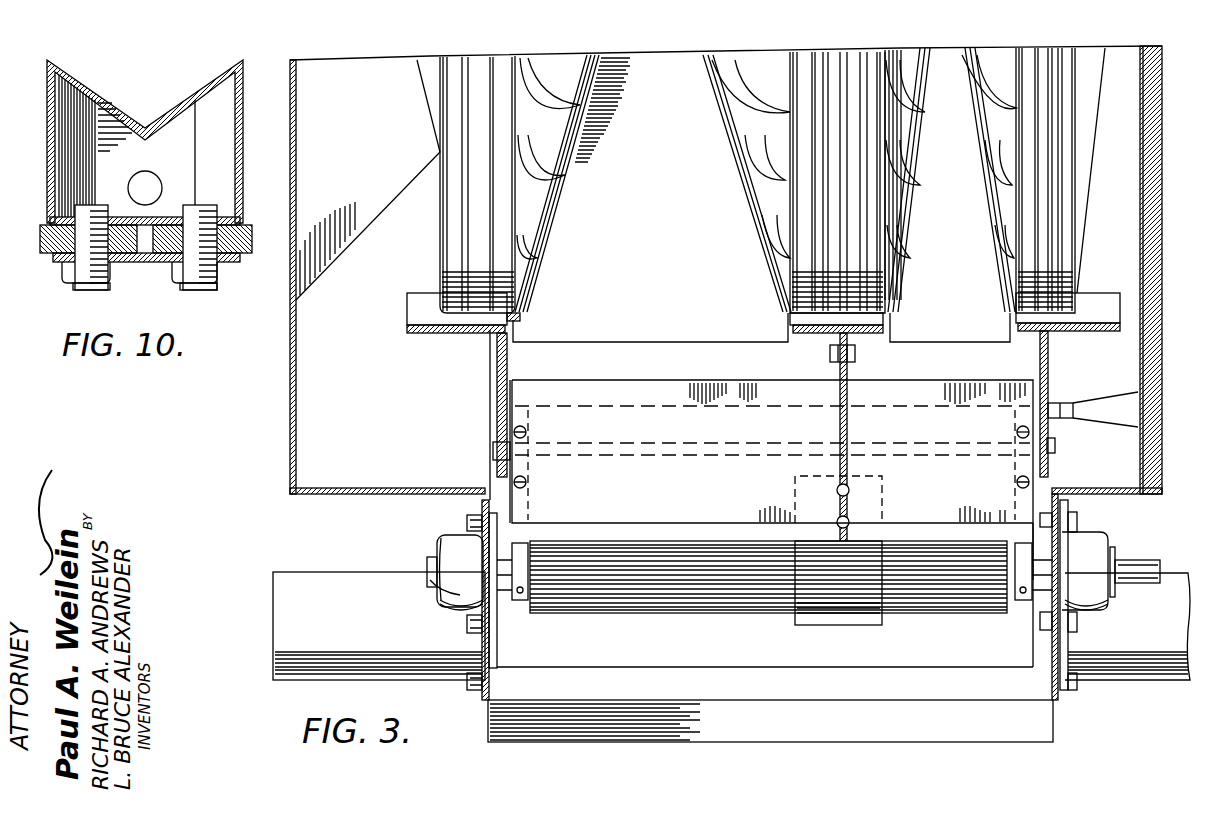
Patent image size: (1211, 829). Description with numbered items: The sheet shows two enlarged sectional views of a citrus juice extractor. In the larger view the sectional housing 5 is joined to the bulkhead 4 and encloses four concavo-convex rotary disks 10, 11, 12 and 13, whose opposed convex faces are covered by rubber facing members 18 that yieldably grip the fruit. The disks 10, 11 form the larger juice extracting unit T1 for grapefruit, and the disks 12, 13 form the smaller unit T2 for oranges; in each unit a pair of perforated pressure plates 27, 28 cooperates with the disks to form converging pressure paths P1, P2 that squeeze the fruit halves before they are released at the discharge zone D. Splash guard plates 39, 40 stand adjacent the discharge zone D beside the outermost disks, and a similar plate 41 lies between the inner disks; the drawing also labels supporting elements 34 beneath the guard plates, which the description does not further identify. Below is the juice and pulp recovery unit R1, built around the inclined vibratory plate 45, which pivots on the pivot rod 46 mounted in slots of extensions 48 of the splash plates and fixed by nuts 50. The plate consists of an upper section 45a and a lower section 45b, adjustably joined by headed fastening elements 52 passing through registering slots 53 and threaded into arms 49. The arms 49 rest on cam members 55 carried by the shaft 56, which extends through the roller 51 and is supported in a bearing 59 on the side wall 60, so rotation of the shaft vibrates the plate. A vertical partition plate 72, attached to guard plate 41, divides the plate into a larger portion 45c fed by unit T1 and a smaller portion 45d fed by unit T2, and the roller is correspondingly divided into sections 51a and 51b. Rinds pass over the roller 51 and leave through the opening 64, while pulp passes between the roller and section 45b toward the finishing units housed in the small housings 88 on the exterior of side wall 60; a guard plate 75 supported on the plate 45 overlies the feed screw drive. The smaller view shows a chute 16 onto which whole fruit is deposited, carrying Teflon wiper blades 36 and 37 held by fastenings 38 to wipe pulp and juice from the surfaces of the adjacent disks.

In FIG. 3, the bulkhead 4 is at (1163, 172).
In FIG. 3, the sectional housing 5 is at (290, 412).
In FIG. 3, the rotary disk 10 is at (545, 137).
In FIG. 3, the rotary disk 11 is at (755, 145).
In FIG. 3, the rotary disk 12 is at (903, 145).
In FIG. 3, the rotary disk 13 is at (980, 152).
In FIG. 10, the chute 16 is at (127, 96).
In FIG. 3, the rubber facing member 18 is at (558, 62).
In FIG. 3, the perforated pressure plate 27 is at (533, 296).
In FIG. 3, the perforated pressure plate 28 is at (772, 296).
In FIG. 3, the support plate 34 is at (522, 320).
In FIG. 10, the wiper blade 36 is at (50, 262).
In FIG. 10, the wiper blade 37 is at (242, 262).
In FIG. 10, the fastening 38 is at (190, 290).
In FIG. 3, the splash guard plate 39 is at (440, 333).
In FIG. 3, the splash guard plate 40 is at (1112, 331).
In FIG. 3, the splash guard plate 41 is at (858, 345).
In FIG. 3, the vibratory plate 45 is at (540, 463).
In FIG. 3, the upper plate section 45a is at (771, 465).
In FIG. 3, the lower plate section 45b is at (738, 535).
In FIG. 3, the larger plate portion 45c is at (682, 505).
In FIG. 3, the smaller plate portion 45d is at (975, 510).
In FIG. 3, the pivot rod 46 is at (695, 443).
In FIG. 3, the extension 48 is at (500, 418).
In FIG. 3, the arm 49 is at (515, 575).
In FIG. 3, the nut 50 is at (493, 445).
In FIG. 3, the roller 51 is at (752, 577).
In FIG. 3, the roller section 51a is at (643, 592).
In FIG. 3, the roller section 51b is at (930, 592).
In FIG. 3, the headed fastening element 52 is at (527, 428).
In FIG. 3, the slot 53 is at (527, 488).
In FIG. 3, the cam member 55 is at (530, 600).
In FIG. 3, the shaft 56 is at (490, 540).
In FIG. 3, the bearing 59 is at (452, 590).
In FIG. 3, the side wall 60 is at (495, 688).
In FIG. 3, the opening 64 is at (745, 695).
In FIG. 3, the vertical partition plate 72 is at (848, 427).
In FIG. 3, the guard plate 75 is at (838, 550).
In FIG. 3, the finisher housing 88 is at (731, 626).
In FIG. 3, the discharge zone D is at (560, 345).
In FIG. 3, the pressure path P1 is at (560, 258).
In FIG. 3, the pressure path P2 is at (750, 220).
In FIG. 3, the juice extracting unit T1 is at (643, 214).
In FIG. 3, the juice extracting unit T2 is at (942, 246).
In FIG. 3, the juice and pulp recovery unit R1 is at (688, 643).